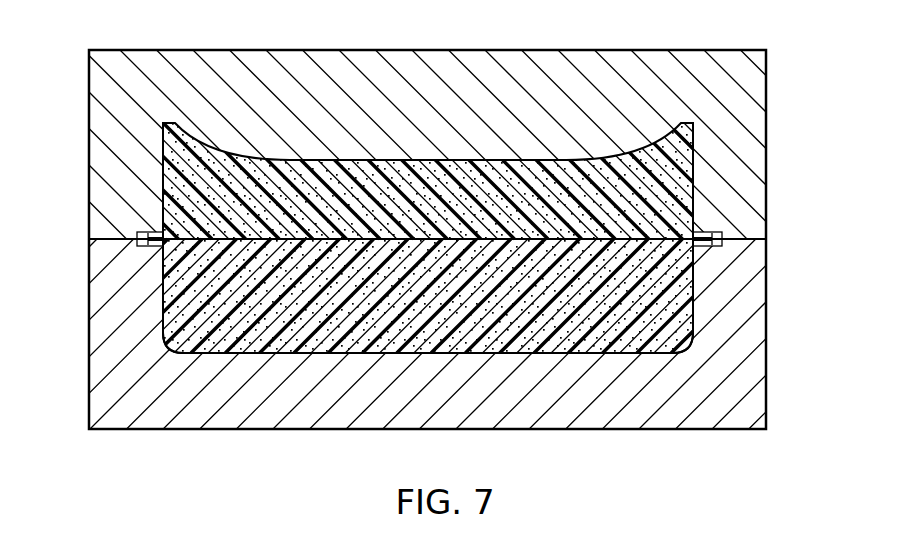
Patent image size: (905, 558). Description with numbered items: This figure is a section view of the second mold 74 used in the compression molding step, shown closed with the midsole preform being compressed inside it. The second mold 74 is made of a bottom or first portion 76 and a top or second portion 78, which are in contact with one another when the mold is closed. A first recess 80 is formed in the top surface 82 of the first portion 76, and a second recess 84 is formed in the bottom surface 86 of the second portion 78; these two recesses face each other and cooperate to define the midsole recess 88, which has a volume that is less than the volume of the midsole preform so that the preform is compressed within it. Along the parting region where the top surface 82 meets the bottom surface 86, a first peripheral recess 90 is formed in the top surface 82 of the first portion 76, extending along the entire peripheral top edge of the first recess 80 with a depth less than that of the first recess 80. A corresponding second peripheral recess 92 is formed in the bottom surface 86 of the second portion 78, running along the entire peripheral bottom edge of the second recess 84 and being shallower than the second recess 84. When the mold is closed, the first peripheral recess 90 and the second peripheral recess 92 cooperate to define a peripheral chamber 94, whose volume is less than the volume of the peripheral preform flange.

The second mold 74 is at (769, 110).
The first portion 76 is at (733, 417).
The second portion 78 is at (718, 84).
The first recess 80 is at (612, 340).
The top surface 82 is at (746, 238).
The second recess 84 is at (513, 169).
The bottom surface 86 is at (118, 240).
The midsole recess 88 is at (252, 358).
The first peripheral recess 90 is at (146, 236).
The second peripheral recess 92 is at (702, 241).
The peripheral chamber 94 is at (148, 245).